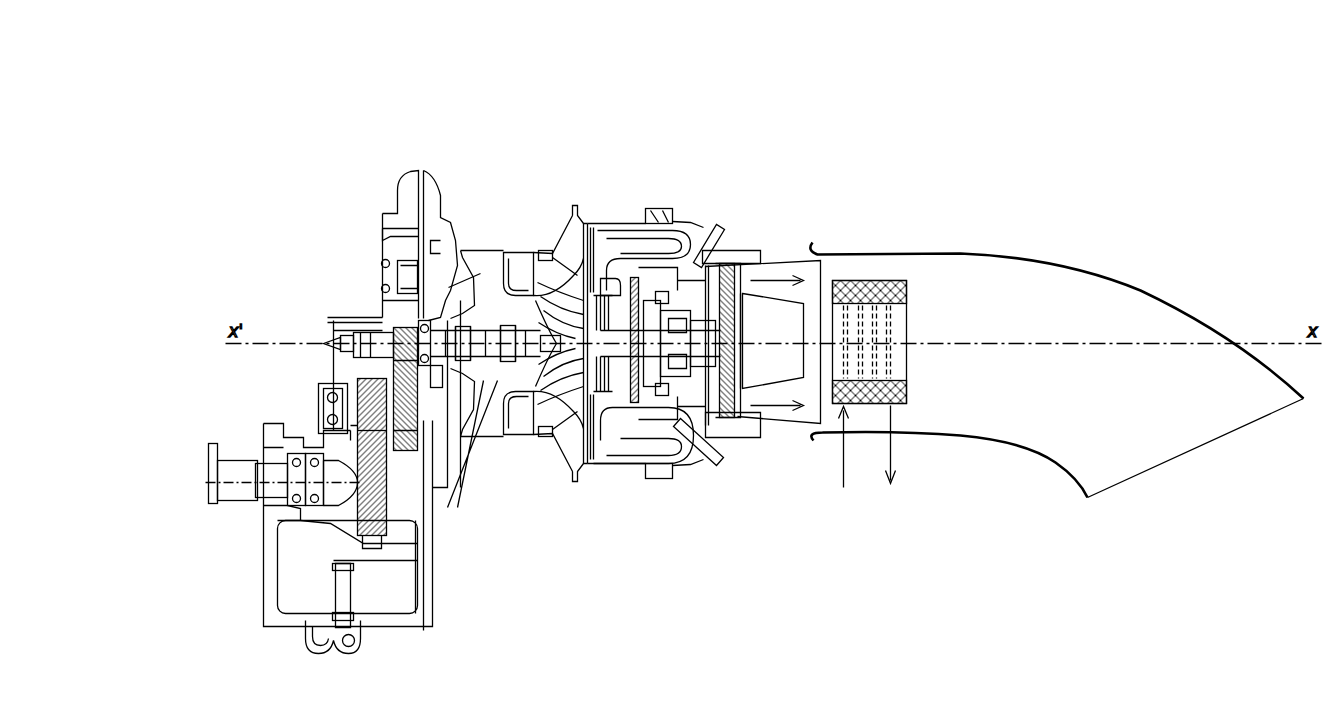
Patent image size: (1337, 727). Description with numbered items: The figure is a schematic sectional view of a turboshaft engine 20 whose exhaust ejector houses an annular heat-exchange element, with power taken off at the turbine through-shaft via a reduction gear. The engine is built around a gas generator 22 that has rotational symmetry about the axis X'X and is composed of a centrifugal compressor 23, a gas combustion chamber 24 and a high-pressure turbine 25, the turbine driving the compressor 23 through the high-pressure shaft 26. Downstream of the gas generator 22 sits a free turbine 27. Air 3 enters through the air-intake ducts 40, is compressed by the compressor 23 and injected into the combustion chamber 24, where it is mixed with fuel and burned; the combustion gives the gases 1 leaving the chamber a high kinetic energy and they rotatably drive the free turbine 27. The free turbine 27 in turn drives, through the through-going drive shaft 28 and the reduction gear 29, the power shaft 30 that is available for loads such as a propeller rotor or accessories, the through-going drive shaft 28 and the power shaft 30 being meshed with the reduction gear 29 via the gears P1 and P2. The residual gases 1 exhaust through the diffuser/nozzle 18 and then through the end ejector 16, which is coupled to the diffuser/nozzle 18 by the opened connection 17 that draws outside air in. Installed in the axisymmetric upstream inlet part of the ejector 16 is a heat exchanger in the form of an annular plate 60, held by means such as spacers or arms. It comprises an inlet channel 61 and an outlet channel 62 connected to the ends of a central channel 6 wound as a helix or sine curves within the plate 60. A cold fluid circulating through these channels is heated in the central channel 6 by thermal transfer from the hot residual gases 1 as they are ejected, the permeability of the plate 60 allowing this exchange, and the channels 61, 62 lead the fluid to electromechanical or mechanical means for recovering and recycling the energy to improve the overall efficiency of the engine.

The turboshaft engine 20 is at (676, 97).
The gas generator 22 is at (672, 147).
The compressor 23 is at (543, 284).
The combustion chamber 24 is at (618, 244).
The high-pressure turbine 25 is at (634, 270).
The high-pressure shaft 26 is at (680, 353).
The free turbine 27 is at (722, 288).
The through-going drive shaft 28 is at (437, 366).
The reduction gear 29 is at (310, 403).
The power shaft 30 is at (245, 503).
The air-intake ducts 40 is at (493, 424).
The air 3 is at (492, 264).
The gases 1 is at (774, 278).
The opened connection 17 is at (816, 243).
The diffuser/nozzle 18 is at (793, 427).
The ejector 16 is at (1170, 293).
The annular plate 60 is at (888, 281).
The central channel 6 is at (896, 324).
The inlet channel 61 is at (850, 452).
The outlet channel 62 is at (898, 450).
The gear P1 is at (400, 330).
The gear P2 is at (387, 527).